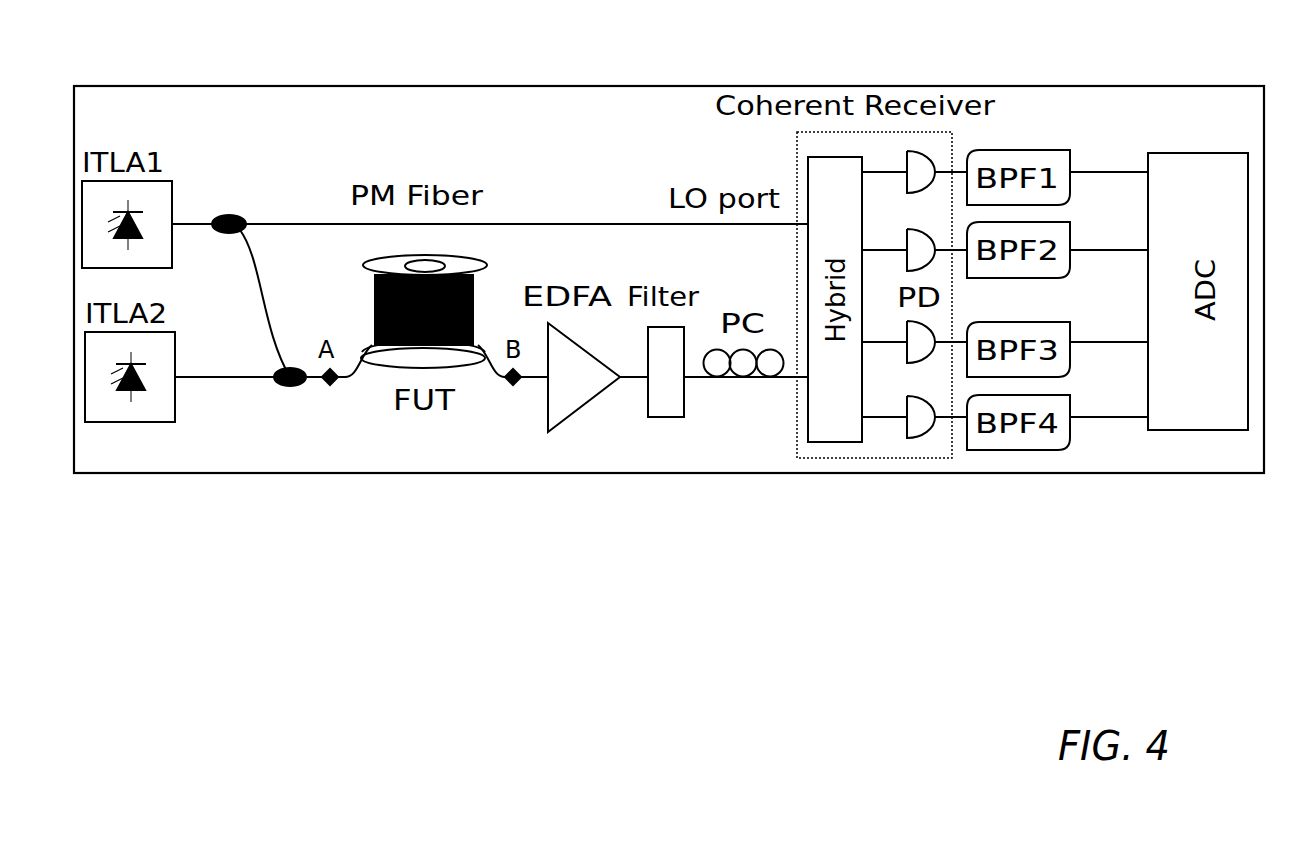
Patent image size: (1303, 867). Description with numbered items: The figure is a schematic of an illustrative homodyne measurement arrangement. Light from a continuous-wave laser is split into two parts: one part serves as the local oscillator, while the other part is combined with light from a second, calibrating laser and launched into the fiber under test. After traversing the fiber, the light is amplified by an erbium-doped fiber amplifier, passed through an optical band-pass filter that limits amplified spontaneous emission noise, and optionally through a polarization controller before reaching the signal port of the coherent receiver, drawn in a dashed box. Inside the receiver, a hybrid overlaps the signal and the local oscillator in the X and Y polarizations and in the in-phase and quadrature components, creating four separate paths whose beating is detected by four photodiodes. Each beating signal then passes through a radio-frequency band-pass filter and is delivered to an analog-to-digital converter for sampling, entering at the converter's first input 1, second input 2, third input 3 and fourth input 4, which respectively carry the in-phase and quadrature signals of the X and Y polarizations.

The ADC input channel 1 (XI) 1 is at (1125, 165).
The ADC input channel 2 (XQ) 2 is at (1125, 242).
The ADC input channel 3 (YI) 3 is at (1125, 330).
The ADC input channel 4 (YQ) 4 is at (1125, 409).